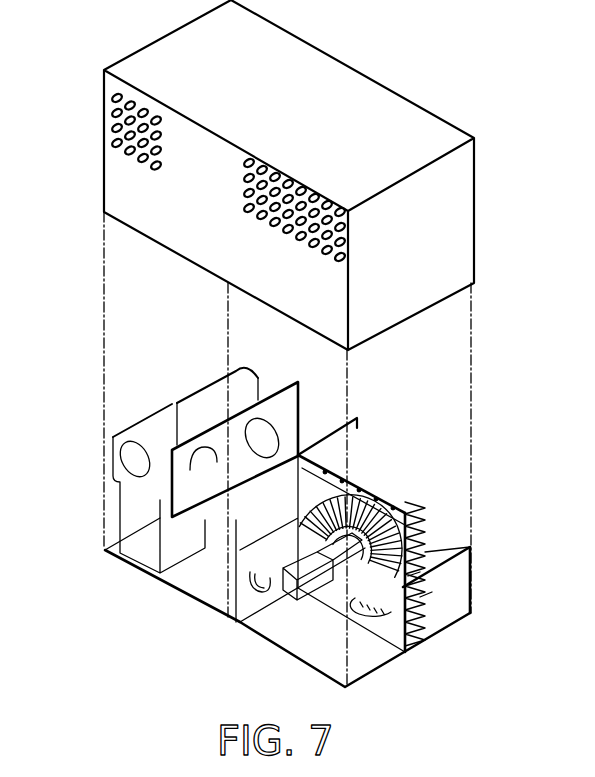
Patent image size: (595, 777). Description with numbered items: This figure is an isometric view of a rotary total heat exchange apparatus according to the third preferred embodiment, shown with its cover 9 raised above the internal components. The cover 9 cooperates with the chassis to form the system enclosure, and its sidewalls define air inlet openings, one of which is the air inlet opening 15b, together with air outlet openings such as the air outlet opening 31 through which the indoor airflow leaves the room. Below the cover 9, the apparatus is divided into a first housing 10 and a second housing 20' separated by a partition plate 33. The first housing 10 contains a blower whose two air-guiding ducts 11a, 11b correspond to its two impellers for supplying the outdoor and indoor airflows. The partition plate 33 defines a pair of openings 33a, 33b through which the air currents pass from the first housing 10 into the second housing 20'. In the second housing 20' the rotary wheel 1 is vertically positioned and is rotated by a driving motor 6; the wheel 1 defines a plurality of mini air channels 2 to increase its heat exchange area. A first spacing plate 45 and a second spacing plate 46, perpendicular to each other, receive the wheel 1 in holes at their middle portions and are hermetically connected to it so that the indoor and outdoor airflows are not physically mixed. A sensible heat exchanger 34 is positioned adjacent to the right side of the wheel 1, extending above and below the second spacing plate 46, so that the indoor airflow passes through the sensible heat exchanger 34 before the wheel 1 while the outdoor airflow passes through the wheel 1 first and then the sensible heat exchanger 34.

The cover 9 is at (340, 82).
The air inlet opening 15b is at (115, 97).
The air outlet opening 31 is at (432, 203).
The air-guiding duct 11a is at (227, 378).
The air-guiding duct 11b is at (153, 425).
The partition plate 33 is at (250, 522).
The opening 33a is at (360, 430).
The opening 33b is at (367, 662).
The sensible heat exchanger 34 is at (362, 467).
The second spacing plate 46 is at (437, 540).
The rotary wheel 1 is at (408, 576).
The mini air channels 2 is at (420, 596).
The driving motor 6 is at (455, 626).
The first spacing plate 45 is at (405, 630).
The first housing 10 is at (95, 557).
The second housing 20' is at (341, 658).